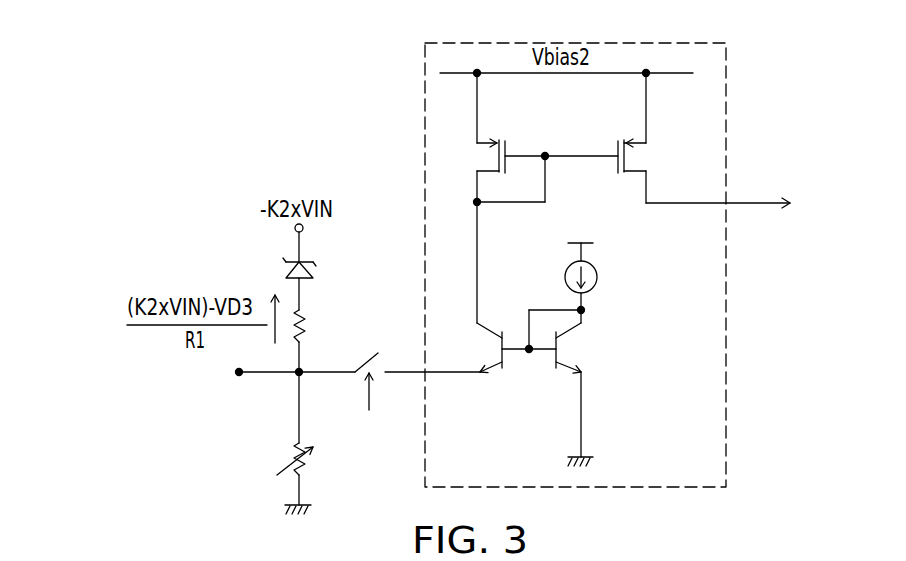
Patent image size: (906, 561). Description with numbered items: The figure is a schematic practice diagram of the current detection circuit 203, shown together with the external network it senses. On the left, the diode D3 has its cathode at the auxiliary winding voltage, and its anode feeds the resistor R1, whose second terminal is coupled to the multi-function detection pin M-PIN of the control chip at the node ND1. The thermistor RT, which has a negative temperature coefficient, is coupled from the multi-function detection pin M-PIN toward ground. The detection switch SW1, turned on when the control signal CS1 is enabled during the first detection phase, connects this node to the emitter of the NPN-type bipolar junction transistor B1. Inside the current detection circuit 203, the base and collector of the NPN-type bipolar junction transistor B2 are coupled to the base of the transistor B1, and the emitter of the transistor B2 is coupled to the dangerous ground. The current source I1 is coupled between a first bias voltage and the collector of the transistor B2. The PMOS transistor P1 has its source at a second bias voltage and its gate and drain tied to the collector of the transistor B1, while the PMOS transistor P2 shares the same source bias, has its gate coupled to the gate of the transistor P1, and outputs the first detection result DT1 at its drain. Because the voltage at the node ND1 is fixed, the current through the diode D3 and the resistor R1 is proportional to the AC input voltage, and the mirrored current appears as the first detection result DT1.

The current detection circuit 203 is at (727, 83).
The PMOS transistor P1 is at (492, 137).
The PMOS transistor P2 is at (629, 138).
The NPN-type bipolar junction transistor B1 is at (491, 287).
The NPN-type bipolar junction transistor B2 is at (567, 388).
The current source I1 is at (585, 263).
The diode D3 is at (311, 271).
The resistor R1 is at (312, 326).
The thermistor RT is at (306, 443).
The detection switch SW1 is at (389, 349).
The control signal CS1 is at (376, 405).
The node ND1 is at (301, 375).
The multi-function detection pin M-PIN is at (236, 378).
The first detection result DT1 is at (735, 204).